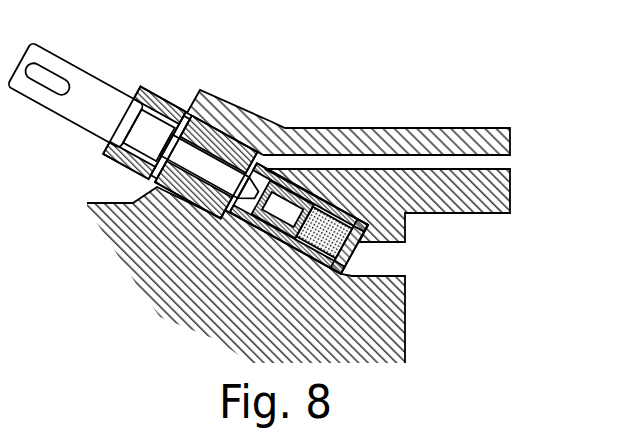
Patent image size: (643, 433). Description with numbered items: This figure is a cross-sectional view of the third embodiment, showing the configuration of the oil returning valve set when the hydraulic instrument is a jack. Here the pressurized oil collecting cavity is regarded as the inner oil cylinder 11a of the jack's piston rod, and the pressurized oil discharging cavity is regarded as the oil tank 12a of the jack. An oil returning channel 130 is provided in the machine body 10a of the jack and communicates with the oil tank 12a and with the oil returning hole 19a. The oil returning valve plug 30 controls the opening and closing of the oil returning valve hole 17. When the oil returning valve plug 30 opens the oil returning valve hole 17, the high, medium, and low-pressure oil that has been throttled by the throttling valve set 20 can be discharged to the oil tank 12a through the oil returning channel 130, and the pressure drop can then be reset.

The oil returning valve plug 30 is at (97, 100).
The oil returning hole 19a is at (263, 140).
The oil returning channel 130 is at (307, 197).
The throttling valve set 20 is at (358, 218).
The oil tank 12a is at (498, 163).
The inner oil cylinder 11a is at (481, 284).
The machine body 10a is at (167, 278).
The oil returning valve hole 17 is at (254, 222).